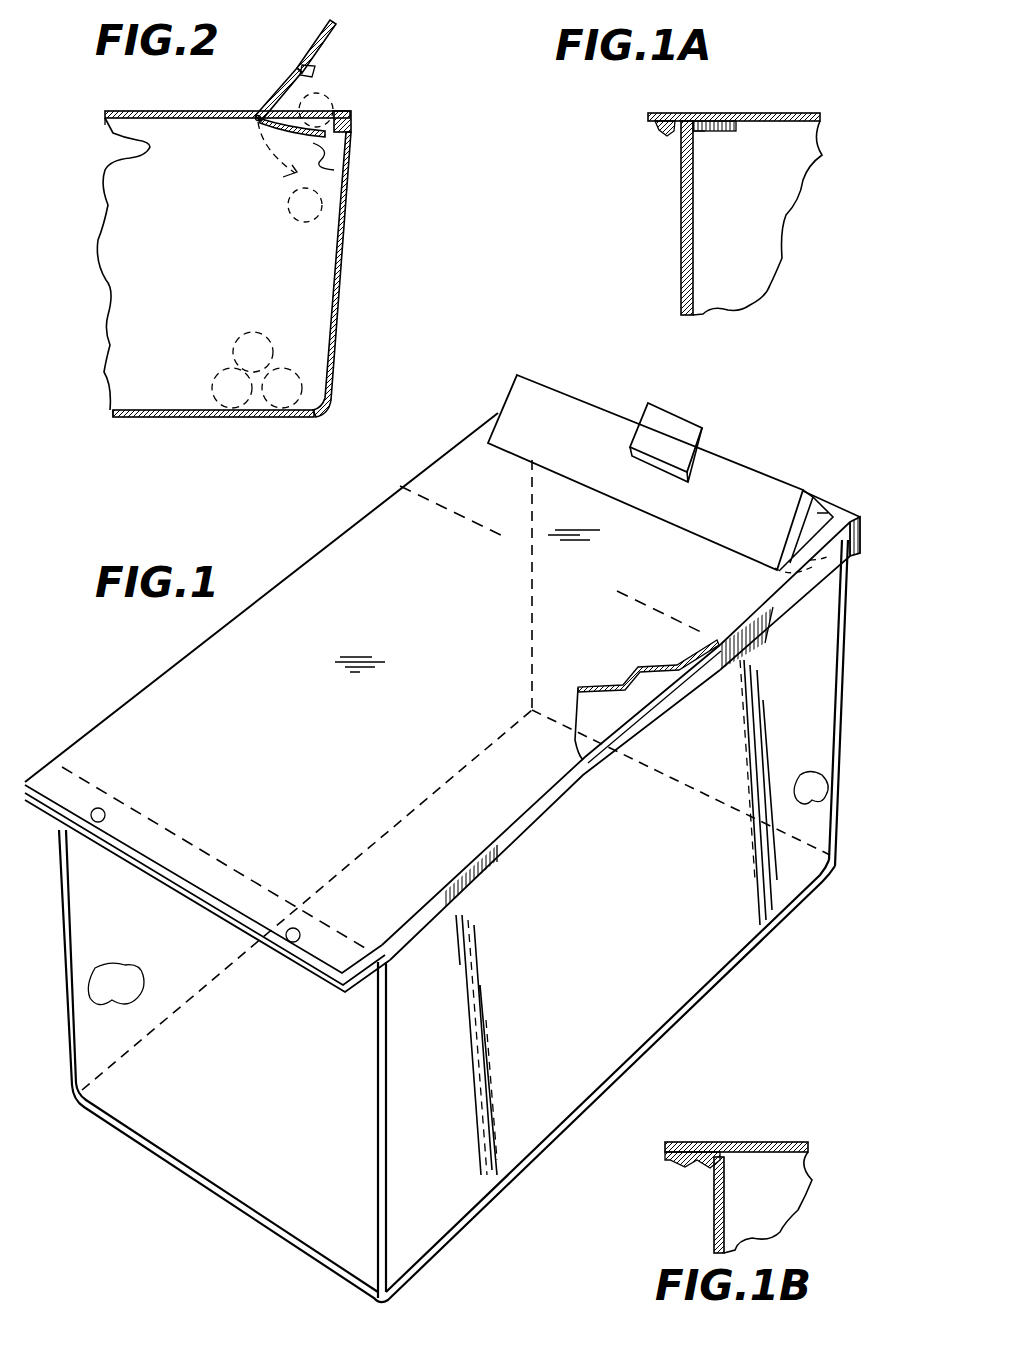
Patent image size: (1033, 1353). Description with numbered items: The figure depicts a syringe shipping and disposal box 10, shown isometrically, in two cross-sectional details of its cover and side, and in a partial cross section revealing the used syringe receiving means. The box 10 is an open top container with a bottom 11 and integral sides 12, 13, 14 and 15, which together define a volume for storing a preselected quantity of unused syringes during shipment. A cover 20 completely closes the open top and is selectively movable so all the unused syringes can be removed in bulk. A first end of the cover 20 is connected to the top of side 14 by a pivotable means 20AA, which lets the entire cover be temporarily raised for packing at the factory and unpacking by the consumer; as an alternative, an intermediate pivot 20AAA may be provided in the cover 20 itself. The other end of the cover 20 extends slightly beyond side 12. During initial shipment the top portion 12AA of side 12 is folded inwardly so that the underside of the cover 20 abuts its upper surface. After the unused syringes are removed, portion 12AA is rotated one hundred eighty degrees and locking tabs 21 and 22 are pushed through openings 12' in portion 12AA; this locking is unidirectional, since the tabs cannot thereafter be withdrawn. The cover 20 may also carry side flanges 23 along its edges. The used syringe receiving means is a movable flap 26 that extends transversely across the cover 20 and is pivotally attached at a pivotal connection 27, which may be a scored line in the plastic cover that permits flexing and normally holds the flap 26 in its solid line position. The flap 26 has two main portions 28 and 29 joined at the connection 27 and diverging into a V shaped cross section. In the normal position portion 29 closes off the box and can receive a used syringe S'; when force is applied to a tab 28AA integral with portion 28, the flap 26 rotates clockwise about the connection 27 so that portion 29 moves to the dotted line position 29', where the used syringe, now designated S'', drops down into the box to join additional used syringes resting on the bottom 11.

In FIG. 2, the box 10 is at (72, 226).
In FIG. 1, the box 10 is at (312, 524).
In FIG. 2, the bottom 11 is at (179, 400).
In FIG. 1A, the side 12 is at (660, 218).
In FIG. 1B, the side 12 is at (689, 1206).
In FIG. 1, the side 12 is at (130, 1013).
In FIG. 1A, the openings 12' is at (723, 160).
In FIG. 1A, the top portion of side 12AA is at (736, 135).
In FIG. 1, the side 13 is at (510, 1140).
In FIG. 2, the side 14 is at (337, 287).
In FIG. 1, the side 14 is at (833, 792).
In FIG. 2, the side 15 is at (108, 348).
In FIG. 1A, the side 15 is at (790, 222).
In FIG. 1B, the side 15 is at (783, 1230).
In FIG. 1, the side 15 is at (100, 1008).
In FIG. 2, the cover 20 is at (182, 110).
In FIG. 1A, the cover 20 is at (775, 112).
In FIG. 1B, the cover 20 is at (770, 1142).
In FIG. 1, the cover 20 is at (162, 690).
In FIG. 2, the pivotable means 20AA is at (394, 111).
In FIG. 2, the intermediate pivot 20AAA is at (106, 163).
In FIG. 1, the intermediate pivot 20AAA is at (412, 489).
In FIG. 1A, the locking tab 21 is at (666, 137).
In FIG. 1B, the locking tab 21 is at (694, 1168).
In FIG. 1, the locking tab 21 is at (325, 910).
In FIG. 1, the locking tab 22 is at (107, 813).
In FIG. 1, the side flange 23 is at (777, 607).
In FIG. 2, the flap 26 is at (282, 52).
In FIG. 1, the flap 26 is at (808, 470).
In FIG. 2, the pivotal connection 27 is at (257, 114).
In FIG. 2, the flap portion 28 is at (310, 70).
In FIG. 2, the tab 28AA is at (330, 38).
In FIG. 1, the tab 28AA is at (690, 422).
In FIG. 2, the flap portion 29 is at (333, 154).
In FIG. 2, the displaced flap portion position 29' is at (252, 164).
In FIG. 2, the used syringe S' is at (329, 98).
In FIG. 2, the used syringe S'' is at (273, 225).